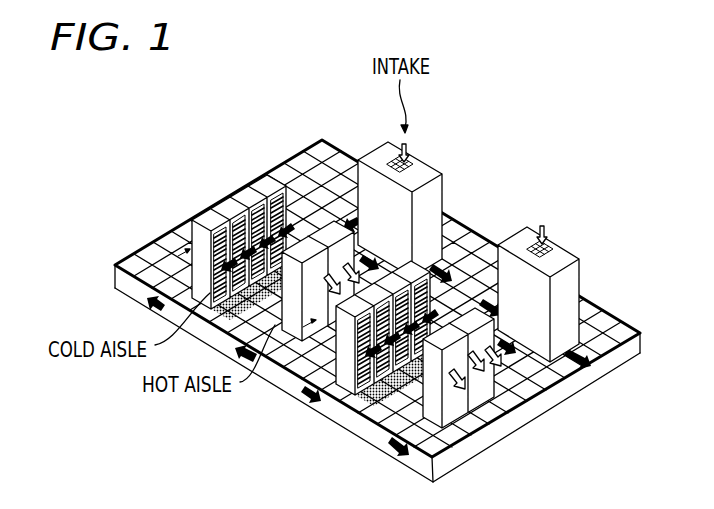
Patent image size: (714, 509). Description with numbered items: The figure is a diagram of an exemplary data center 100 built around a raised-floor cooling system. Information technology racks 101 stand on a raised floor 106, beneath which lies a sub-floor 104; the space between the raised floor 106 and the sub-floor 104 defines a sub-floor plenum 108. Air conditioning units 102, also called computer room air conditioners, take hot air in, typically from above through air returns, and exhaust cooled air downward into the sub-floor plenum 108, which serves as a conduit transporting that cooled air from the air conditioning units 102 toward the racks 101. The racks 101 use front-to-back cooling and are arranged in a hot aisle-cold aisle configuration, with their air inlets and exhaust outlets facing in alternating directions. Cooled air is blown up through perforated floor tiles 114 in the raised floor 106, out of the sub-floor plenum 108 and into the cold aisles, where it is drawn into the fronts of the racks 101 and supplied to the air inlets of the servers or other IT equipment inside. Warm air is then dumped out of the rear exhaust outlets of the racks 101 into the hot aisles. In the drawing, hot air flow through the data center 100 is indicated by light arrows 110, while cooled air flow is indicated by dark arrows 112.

The data center 100 is at (125, 97).
The information technology (IT) rack 101 is at (222, 208).
The air conditioning unit 102 is at (447, 162).
The sub-floor 104 is at (372, 446).
The raised floor 106 is at (525, 400).
The sub-floor plenum 108 is at (610, 363).
The light arrows 110 is at (558, 224).
The dark arrows 112 is at (452, 260).
The perforated floor tile 114 is at (362, 402).